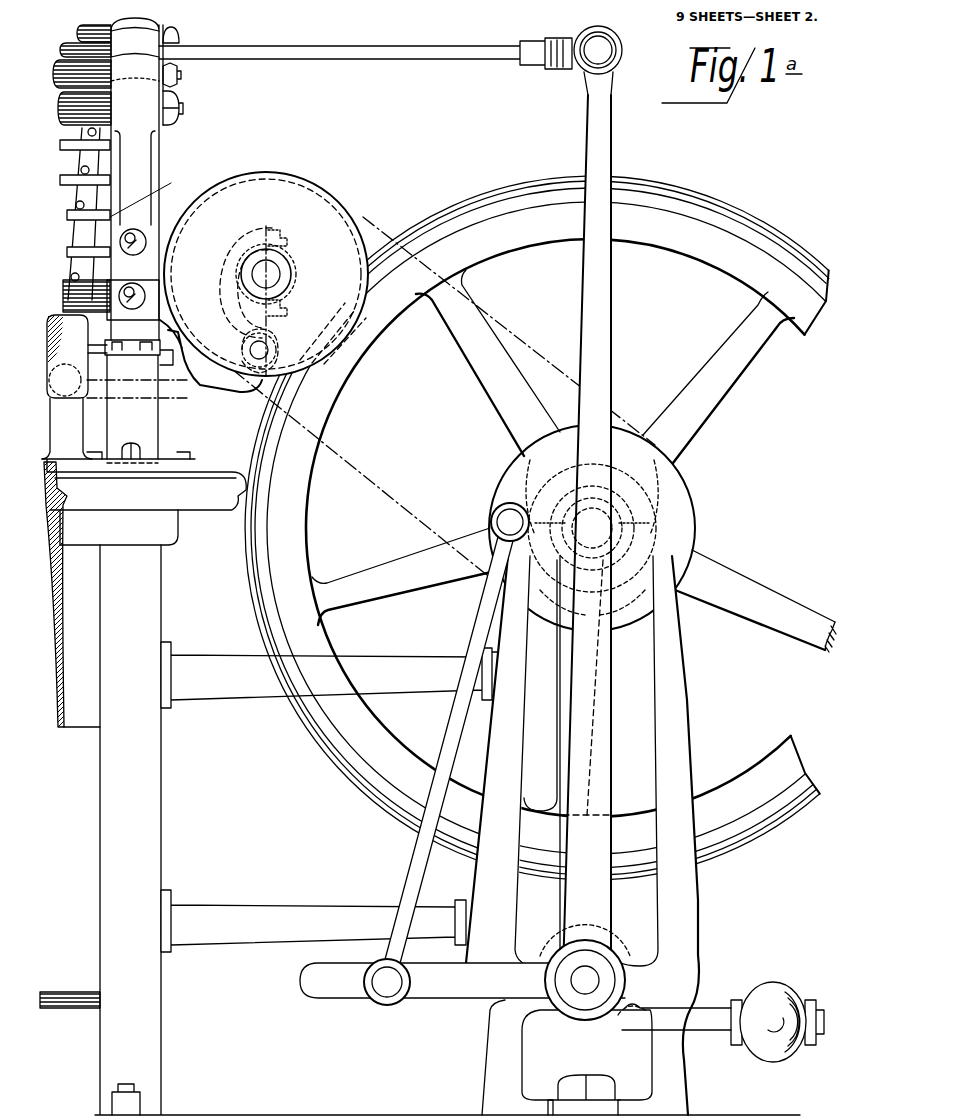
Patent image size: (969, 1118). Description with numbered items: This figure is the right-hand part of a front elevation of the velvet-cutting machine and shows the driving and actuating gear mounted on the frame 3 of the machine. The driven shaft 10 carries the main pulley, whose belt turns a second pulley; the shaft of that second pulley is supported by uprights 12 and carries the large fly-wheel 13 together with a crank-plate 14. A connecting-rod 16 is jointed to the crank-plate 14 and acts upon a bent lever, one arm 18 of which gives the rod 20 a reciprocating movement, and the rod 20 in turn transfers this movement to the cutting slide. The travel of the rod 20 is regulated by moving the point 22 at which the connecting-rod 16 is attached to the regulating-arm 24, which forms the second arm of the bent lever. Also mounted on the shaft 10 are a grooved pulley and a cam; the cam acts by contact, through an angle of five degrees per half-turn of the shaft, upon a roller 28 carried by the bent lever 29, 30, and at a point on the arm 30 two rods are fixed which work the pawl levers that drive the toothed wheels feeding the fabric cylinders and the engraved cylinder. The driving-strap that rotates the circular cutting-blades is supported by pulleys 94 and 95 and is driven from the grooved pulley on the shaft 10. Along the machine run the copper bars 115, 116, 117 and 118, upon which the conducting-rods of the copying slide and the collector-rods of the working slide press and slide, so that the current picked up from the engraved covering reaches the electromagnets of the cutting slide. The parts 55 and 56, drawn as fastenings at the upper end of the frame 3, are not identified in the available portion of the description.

The frame 3 is at (116, 238).
The shaft 10 is at (268, 274).
The uprights 12 is at (492, 938).
The fly-wheel 13 is at (714, 226).
The crank-plate 14 is at (679, 499).
The connecting-rod 16 is at (422, 863).
The arm of bent lever 18 is at (590, 687).
The rod 20 is at (356, 50).
The point of attachment 22 is at (385, 993).
The regulating-arm 24 is at (533, 981).
The roller 28 is at (271, 340).
The bent lever 29 is at (231, 396).
The arm of bent lever 30 is at (151, 189).
The bolt 55 is at (182, 73).
The bolt 56 is at (184, 108).
The pulley 94 is at (141, 236).
The pulley 95 is at (146, 296).
The copper bar 115 is at (66, 253).
The copper bar 116 is at (97, 222).
The copper bar 117 is at (62, 181).
The copper bar 118 is at (62, 146).